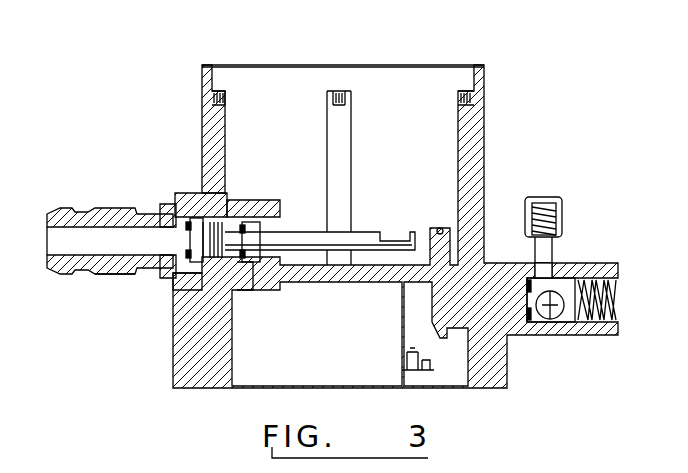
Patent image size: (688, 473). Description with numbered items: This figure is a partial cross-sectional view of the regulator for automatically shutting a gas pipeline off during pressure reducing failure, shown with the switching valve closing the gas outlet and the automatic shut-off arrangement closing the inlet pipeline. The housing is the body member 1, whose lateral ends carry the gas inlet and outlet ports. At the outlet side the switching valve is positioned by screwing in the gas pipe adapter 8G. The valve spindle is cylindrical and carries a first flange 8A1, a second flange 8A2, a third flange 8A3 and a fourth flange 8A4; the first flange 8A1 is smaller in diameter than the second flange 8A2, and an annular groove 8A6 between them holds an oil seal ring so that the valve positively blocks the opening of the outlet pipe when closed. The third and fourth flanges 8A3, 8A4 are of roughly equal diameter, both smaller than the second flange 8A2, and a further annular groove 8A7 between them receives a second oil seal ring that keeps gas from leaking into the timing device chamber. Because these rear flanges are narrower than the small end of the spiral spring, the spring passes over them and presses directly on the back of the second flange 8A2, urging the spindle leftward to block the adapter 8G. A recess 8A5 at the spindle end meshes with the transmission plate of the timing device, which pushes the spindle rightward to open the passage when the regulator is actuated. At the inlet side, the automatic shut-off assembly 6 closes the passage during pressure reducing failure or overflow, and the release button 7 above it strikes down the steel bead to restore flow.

The body member 1 is at (190, 67).
The gas pipe adapter 8G is at (90, 207).
The annular groove 8A6 is at (160, 210).
The annular groove 8A7 is at (202, 196).
The first flange 8A1 is at (118, 275).
The second flange 8A2 is at (166, 282).
The third flange 8A3 is at (250, 265).
The fourth flange 8A4 is at (285, 270).
The recess 8A5 is at (399, 243).
The release button 7 is at (543, 198).
The automatic shut-off assembly 6 is at (572, 336).